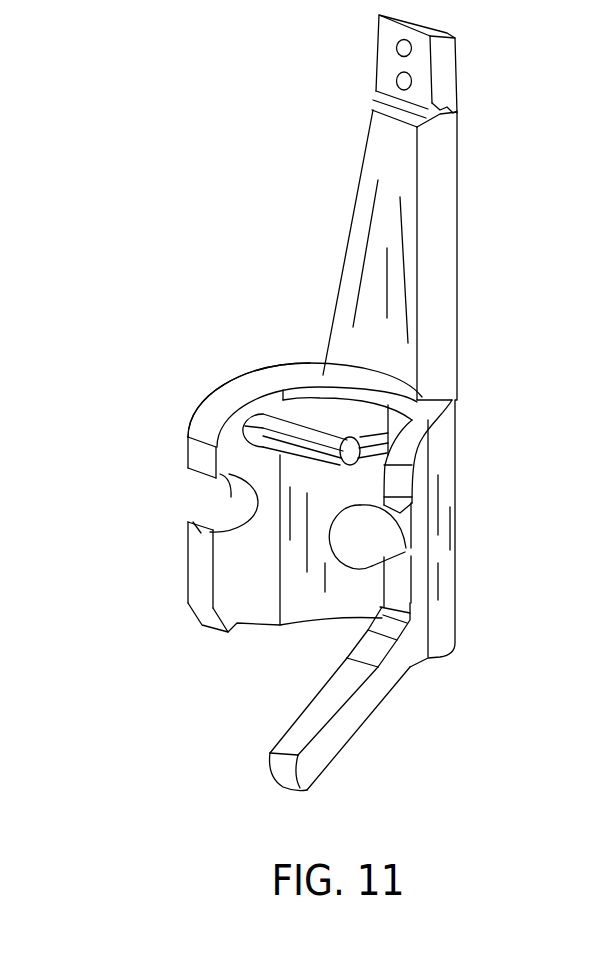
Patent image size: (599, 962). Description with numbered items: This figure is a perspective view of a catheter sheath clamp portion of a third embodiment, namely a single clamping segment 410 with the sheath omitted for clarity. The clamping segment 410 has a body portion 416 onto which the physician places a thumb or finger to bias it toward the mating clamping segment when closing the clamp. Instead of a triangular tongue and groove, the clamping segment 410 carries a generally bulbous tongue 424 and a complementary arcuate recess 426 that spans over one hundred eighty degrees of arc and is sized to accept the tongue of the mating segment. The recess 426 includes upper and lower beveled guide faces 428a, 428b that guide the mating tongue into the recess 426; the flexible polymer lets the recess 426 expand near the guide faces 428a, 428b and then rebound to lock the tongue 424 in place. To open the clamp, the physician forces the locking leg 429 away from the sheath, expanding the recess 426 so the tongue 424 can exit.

The clamping segment 410 is at (292, 198).
The body portion 416 is at (457, 250).
The tongue 424 is at (403, 553).
The arcuate recess 426 is at (217, 500).
The upper beveled guide face 428a is at (187, 470).
The lower beveled guide face 428b is at (187, 532).
The locking leg 429 is at (300, 720).